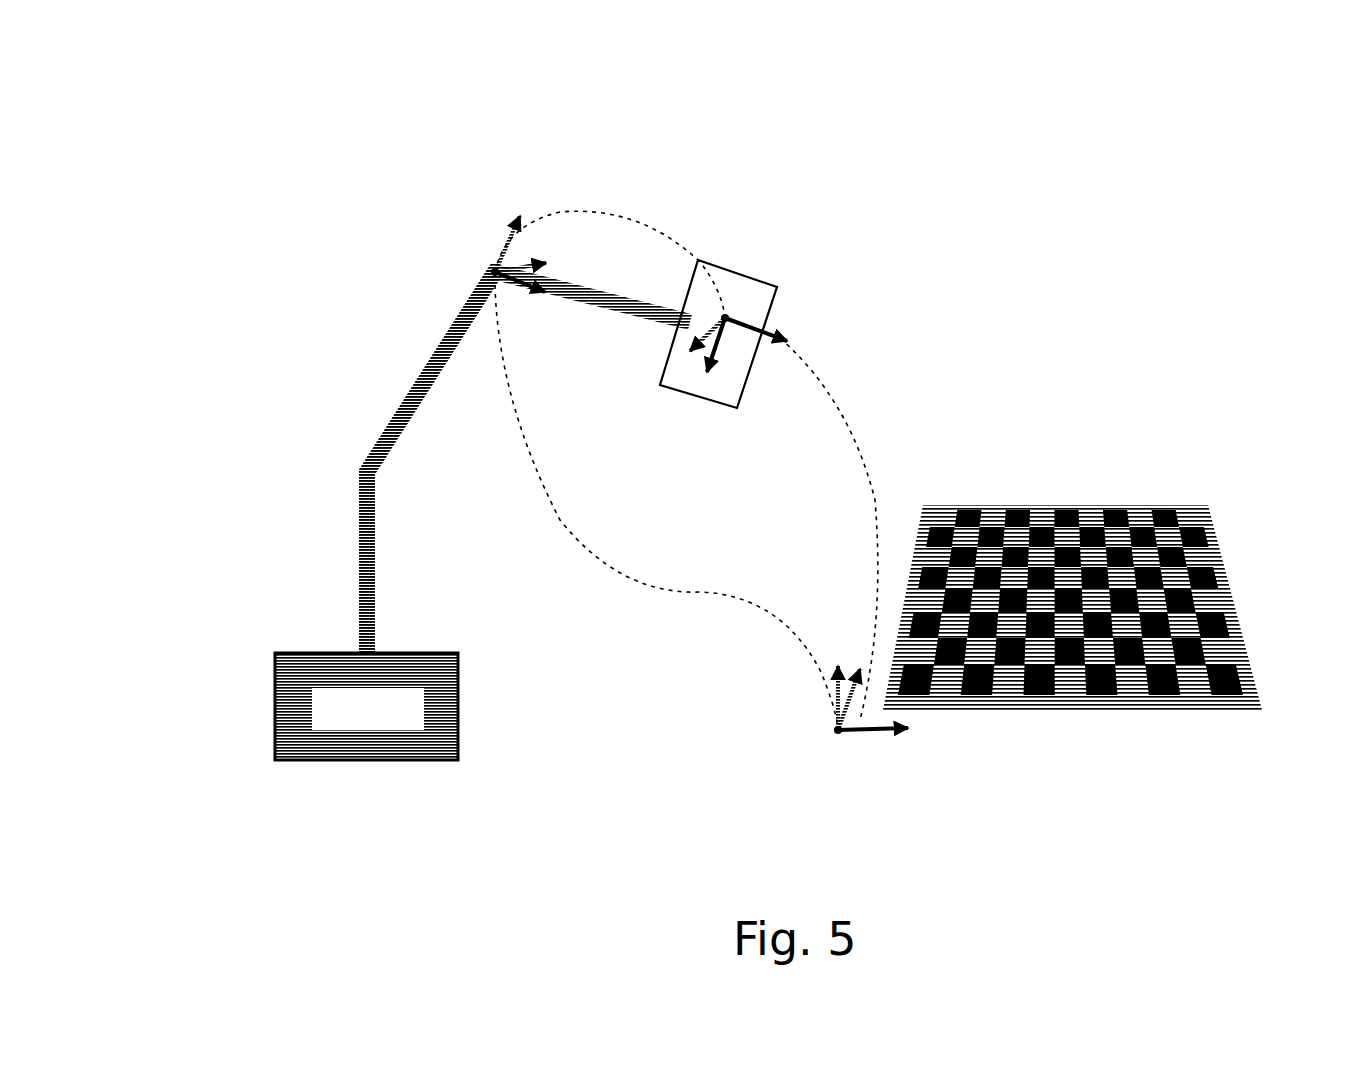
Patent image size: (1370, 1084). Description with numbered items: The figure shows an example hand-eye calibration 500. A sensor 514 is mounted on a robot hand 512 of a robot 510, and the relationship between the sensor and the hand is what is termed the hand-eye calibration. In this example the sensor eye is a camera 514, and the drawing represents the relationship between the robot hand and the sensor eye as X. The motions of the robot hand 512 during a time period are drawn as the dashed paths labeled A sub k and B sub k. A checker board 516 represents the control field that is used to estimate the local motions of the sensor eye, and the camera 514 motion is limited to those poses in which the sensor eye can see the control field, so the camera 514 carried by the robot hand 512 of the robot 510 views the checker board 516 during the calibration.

The hand-eye calibration system 500 is at (340, 104).
The robot 510 is at (275, 703).
The robot hand 512 is at (440, 337).
The sensor 514 is at (740, 263).
The checker board 516 is at (1215, 538).